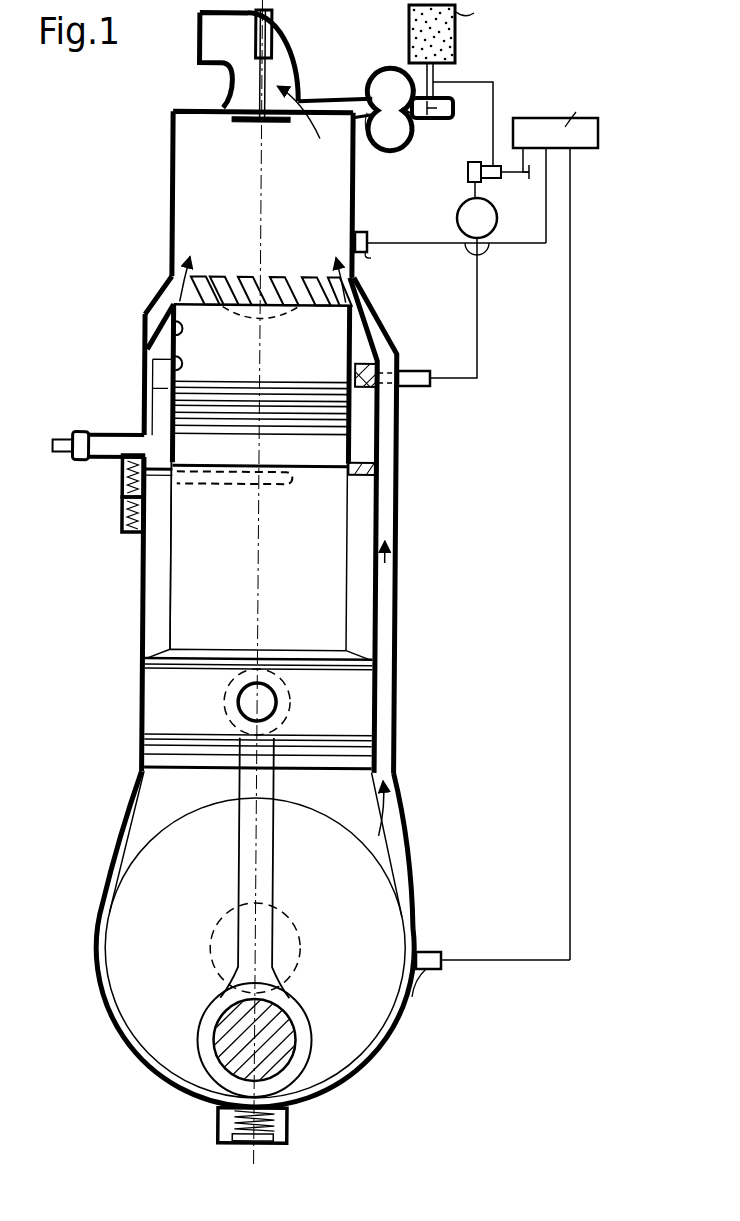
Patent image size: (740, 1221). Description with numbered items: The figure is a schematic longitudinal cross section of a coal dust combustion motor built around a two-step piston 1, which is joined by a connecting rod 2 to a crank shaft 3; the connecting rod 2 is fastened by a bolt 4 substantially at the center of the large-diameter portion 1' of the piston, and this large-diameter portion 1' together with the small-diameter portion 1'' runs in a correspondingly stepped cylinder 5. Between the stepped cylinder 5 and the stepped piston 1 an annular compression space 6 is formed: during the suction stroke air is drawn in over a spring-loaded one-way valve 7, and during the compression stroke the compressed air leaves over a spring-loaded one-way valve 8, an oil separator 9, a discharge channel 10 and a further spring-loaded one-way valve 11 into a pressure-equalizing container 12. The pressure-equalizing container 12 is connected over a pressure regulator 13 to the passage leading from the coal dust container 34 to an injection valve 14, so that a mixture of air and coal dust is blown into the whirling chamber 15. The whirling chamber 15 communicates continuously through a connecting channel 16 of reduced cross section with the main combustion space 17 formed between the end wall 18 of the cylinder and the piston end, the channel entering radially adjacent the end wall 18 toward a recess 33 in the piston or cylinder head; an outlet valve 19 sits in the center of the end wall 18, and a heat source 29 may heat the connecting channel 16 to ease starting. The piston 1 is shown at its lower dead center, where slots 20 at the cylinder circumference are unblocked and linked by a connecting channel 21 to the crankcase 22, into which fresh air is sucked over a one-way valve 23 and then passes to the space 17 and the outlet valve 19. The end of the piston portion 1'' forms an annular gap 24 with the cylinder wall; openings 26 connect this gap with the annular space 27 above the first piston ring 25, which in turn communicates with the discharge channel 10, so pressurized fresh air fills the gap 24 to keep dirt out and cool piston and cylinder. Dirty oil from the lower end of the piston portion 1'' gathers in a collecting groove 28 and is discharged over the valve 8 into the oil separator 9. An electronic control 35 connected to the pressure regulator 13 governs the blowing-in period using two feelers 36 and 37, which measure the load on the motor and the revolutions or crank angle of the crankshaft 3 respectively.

The two-step piston 1 is at (307, 556).
The large-diameter portion 1' is at (295, 709).
The small-diameter portion 1'' is at (316, 385).
The connecting rod 2 is at (268, 842).
The crank shaft 3 is at (278, 1047).
The bolt 4 is at (270, 695).
The stepped cylinder 5 is at (364, 503).
The annular compression space 6 is at (166, 583).
The spring-loaded one-way valve 7 is at (126, 518).
The spring-loaded one-way valve 8 is at (126, 485).
The oil separator 9 is at (120, 440).
The discharge channel 10 is at (153, 410).
The spring-loaded one-way valve 11 is at (374, 340).
The pressure-equalizing container 12 is at (457, 218).
The pressure regulator 13 is at (513, 173).
The injection valve 14 is at (445, 121).
The whirling chamber 15 is at (397, 134).
The connecting channel 16 is at (357, 96).
The main combustion space 17 is at (194, 186).
The end wall 18 is at (318, 97).
The outlet valve 19 is at (273, 67).
The slots 20 is at (282, 283).
The connecting channel 21 is at (388, 612).
The crankcase 22 is at (130, 910).
The one-way valve 23 is at (288, 1122).
The annular gap 24 is at (150, 310).
The first piston ring 25 is at (281, 385).
The openings 26 is at (150, 352).
The annular space 27 is at (165, 373).
The collecting groove 28 is at (247, 483).
The heat source 29 is at (367, 129).
The recess 33 is at (250, 318).
The coal dust container 34 is at (456, 42).
The electronic control 35 is at (585, 150).
The feeler 36 is at (367, 234).
The feeler 37 is at (428, 952).